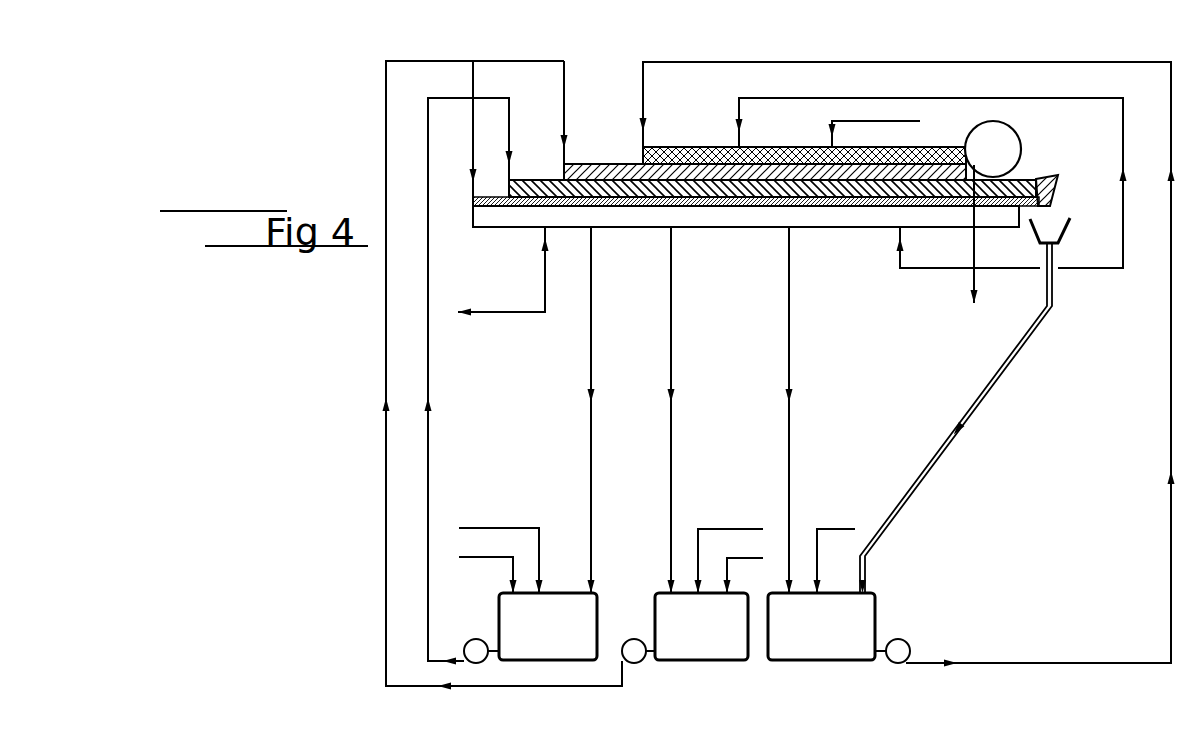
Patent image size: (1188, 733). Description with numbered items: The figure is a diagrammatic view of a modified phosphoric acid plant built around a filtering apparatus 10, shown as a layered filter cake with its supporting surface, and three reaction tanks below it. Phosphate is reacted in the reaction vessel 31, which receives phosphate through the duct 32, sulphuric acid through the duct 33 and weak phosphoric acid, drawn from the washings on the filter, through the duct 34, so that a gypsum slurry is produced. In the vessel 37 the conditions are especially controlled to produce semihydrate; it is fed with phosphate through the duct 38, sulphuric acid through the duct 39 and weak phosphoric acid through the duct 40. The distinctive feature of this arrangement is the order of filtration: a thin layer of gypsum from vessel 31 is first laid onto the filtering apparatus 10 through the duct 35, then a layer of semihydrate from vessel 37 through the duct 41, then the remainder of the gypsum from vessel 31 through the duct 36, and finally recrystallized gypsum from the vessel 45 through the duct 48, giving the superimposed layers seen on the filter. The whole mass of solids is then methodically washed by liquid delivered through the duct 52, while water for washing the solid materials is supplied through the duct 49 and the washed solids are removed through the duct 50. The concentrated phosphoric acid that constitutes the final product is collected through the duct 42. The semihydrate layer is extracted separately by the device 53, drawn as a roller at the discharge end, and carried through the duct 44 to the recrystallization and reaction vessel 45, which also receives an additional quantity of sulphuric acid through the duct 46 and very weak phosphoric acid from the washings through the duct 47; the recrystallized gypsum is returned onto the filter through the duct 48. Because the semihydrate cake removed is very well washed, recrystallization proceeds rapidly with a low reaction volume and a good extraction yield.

The filtering apparatus 10 is at (518, 216).
The reaction vessel 31 is at (684, 643).
The duct 32 is at (729, 558).
The duct 33 is at (700, 529).
The duct 34 is at (671, 486).
The duct 35 is at (473, 139).
The duct 36 is at (564, 118).
The vessel 37 is at (533, 643).
The duct 38 is at (492, 557).
The duct 39 is at (510, 528).
The duct 40 is at (591, 490).
The duct 41 is at (509, 144).
The duct 42 is at (507, 312).
The duct 44 is at (908, 498).
The recrystallization and reaction vessel 45 is at (805, 643).
The duct 46 is at (849, 529).
The duct 47 is at (789, 486).
The duct 48 is at (800, 62).
The duct 49 is at (832, 122).
The duct 50 is at (974, 288).
The duct 52 is at (856, 98).
The device 53 is at (1005, 138).